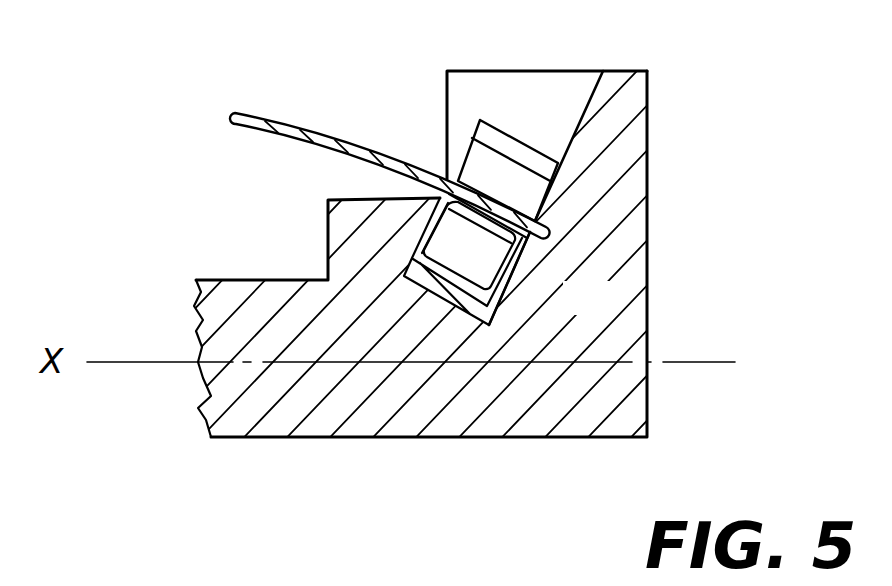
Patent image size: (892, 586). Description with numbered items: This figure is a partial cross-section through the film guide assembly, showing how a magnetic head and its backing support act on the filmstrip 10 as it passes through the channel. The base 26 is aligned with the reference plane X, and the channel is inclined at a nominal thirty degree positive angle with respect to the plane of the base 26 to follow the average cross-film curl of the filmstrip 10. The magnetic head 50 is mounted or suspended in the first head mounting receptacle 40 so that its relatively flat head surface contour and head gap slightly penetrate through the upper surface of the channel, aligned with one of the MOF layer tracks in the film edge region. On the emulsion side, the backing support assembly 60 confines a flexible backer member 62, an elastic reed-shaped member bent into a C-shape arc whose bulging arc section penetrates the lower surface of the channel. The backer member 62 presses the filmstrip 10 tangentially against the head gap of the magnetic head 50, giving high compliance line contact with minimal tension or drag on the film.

The filmstrip 10 is at (236, 110).
The base 26 is at (212, 398).
The first head mounting receptacle 40 is at (502, 77).
The magnetic head 50 is at (524, 152).
The backing support assembly 60 is at (513, 268).
The flexible backer member 62 is at (445, 242).